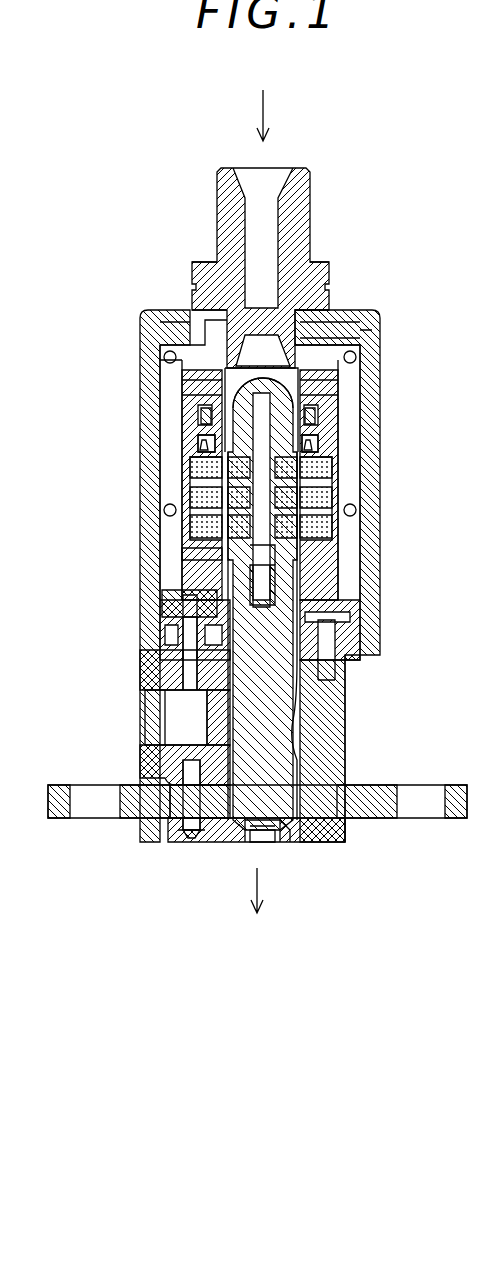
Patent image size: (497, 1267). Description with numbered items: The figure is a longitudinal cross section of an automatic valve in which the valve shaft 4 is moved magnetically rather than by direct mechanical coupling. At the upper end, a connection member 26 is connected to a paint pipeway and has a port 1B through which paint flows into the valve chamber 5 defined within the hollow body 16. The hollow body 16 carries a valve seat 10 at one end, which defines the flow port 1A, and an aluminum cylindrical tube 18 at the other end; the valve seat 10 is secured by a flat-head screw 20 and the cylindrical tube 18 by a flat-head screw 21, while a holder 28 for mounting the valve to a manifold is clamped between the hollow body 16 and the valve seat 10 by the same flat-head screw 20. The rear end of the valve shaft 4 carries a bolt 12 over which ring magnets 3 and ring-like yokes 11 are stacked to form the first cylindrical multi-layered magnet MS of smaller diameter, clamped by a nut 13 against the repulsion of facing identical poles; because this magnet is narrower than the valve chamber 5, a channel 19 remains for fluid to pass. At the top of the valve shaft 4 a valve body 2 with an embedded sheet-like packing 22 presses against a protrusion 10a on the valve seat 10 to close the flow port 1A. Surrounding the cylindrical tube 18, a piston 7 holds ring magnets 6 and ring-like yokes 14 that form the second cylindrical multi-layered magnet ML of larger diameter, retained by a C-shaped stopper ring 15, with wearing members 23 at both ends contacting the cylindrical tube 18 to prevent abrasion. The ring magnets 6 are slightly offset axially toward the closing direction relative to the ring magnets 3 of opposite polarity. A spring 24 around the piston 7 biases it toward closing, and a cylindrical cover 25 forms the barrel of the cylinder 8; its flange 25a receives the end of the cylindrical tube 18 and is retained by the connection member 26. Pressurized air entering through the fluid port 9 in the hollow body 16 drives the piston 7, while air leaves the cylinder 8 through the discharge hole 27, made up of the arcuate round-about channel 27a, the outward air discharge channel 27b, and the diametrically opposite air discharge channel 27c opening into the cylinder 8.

The port 1B is at (274, 177).
The flow port 1A is at (248, 838).
The valve body 2 is at (240, 780).
The ring magnet 3 is at (305, 472).
The valve shaft 4 is at (272, 680).
The valve chamber 5 is at (292, 722).
The ring magnet 6 is at (205, 468).
The piston 7 is at (180, 395).
The cylinder 8 is at (186, 422).
The fluid port 9 is at (167, 718).
The valve seat 10 is at (340, 840).
The protrusion 10a is at (292, 842).
The ring-like yoke 11 is at (328, 450).
The bolt 12 is at (283, 578).
The nut 13 is at (306, 378).
The ring-like yoke 14 is at (166, 448).
The C-shaped stopper ring 15 is at (162, 372).
The hollow body 16 is at (330, 750).
The cylindrical tube 18 is at (178, 596).
The channel 19 is at (192, 660).
The flat-head screw 20 is at (172, 822).
The flat-head screw 21 is at (337, 652).
The sheet-like packing 22 is at (270, 840).
The wearing member 23 is at (322, 408).
The spring 24 is at (152, 345).
The cylindrical cover 25 is at (162, 626).
The flange 25a is at (165, 330).
The connection member 26 is at (322, 268).
The discharge hole 27 is at (378, 330).
The round-about channel 27a is at (335, 318).
The air discharge channel 27b is at (378, 350).
The air discharge channel 27c is at (205, 322).
The holder 28 is at (455, 818).
The second cylindrical multi-layered magnet ML is at (84, 462).
The first cylindrical multi-layered magnet MS is at (428, 478).